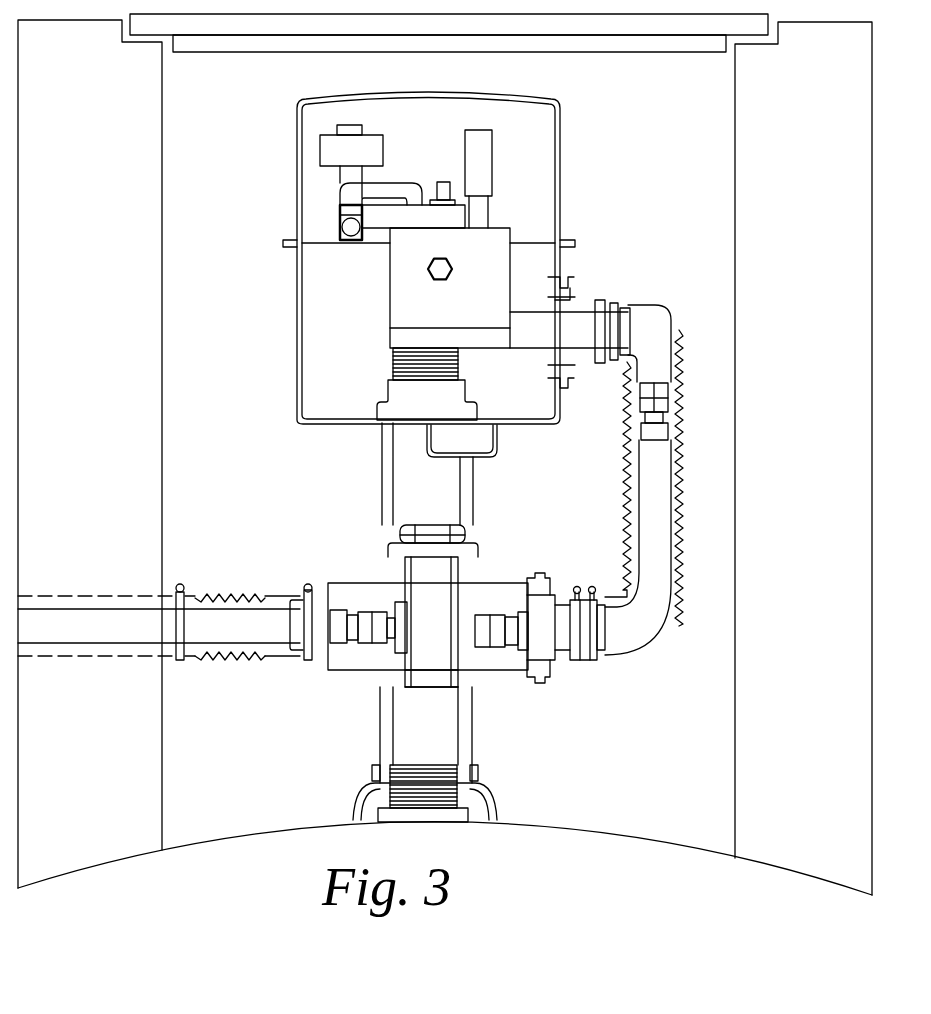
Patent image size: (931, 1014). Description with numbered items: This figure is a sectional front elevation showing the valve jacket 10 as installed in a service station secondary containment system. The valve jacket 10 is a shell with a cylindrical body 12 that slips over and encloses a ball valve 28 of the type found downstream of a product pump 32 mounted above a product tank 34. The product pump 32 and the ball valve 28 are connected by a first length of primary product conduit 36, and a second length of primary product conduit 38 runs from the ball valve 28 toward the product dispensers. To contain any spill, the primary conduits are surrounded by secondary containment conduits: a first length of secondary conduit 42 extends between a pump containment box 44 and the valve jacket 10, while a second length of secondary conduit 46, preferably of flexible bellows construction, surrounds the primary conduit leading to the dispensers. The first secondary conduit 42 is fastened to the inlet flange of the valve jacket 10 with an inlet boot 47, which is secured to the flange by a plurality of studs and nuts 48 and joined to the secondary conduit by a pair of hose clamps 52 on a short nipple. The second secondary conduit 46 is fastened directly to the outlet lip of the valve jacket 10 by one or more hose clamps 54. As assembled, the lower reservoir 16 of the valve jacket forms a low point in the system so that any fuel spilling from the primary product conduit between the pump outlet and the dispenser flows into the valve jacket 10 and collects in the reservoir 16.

The valve jacket 10 is at (423, 632).
The cylindrical body 12 is at (357, 672).
The lower reservoir 16 is at (441, 678).
The ball valve 28 is at (425, 635).
The product pump 32 is at (497, 238).
The product tank 34 is at (598, 830).
The first length of primary product conduit 36 is at (642, 610).
The second length of primary product conduit 38 is at (243, 630).
The first length of secondary conduit 42 is at (627, 658).
The pump containment box 44 is at (290, 216).
The second length of secondary conduit 46 is at (265, 598).
The inlet boot 47 is at (558, 660).
The studs and nuts 48 is at (550, 683).
The hose clamps 52 is at (576, 588).
The hose clamps 54 is at (308, 660).